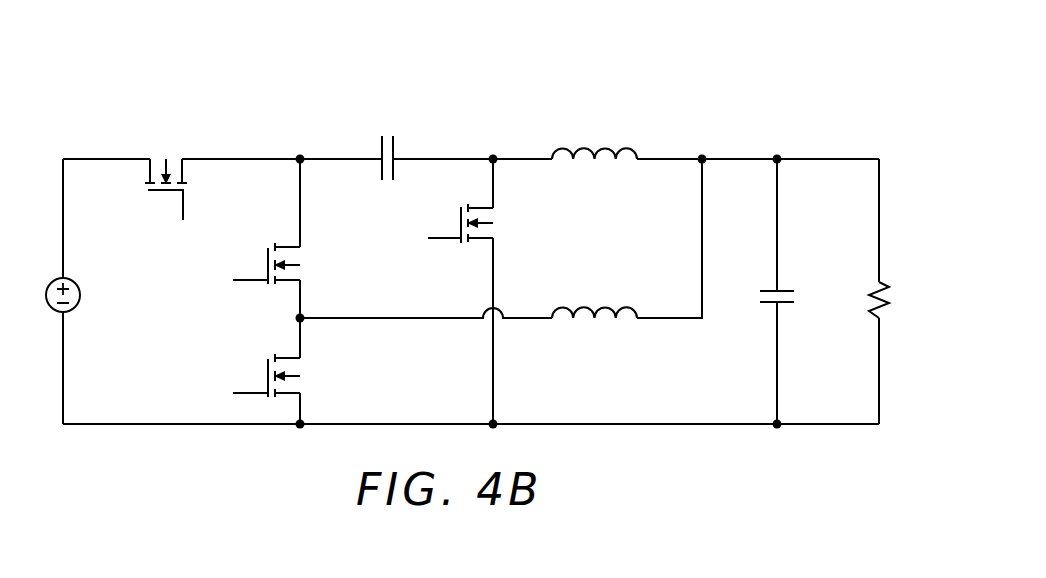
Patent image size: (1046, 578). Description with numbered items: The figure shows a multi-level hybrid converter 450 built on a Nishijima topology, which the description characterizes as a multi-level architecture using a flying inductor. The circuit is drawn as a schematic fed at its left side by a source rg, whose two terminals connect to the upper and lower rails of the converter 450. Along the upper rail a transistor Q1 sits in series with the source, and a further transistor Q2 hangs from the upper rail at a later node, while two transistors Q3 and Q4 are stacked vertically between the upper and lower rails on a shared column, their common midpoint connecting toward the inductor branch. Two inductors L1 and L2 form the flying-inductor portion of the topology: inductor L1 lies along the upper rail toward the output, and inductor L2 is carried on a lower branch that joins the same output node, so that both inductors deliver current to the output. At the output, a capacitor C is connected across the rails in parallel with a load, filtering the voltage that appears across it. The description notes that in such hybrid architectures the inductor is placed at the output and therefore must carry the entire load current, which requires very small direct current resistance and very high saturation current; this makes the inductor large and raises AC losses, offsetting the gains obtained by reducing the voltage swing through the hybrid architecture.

The Nishijima topology multi-level hybrid converter 450 is at (148, 53).
The input voltage source rg is at (49, 297).
The transistor Q1 is at (166, 171).
The transistor Q2 is at (456, 223).
The transistor Q3 is at (264, 263).
The transistor Q4 is at (264, 375).
The inductor L1 is at (594, 140).
The inductor L2 is at (594, 300).
The output capacitor C is at (767, 299).